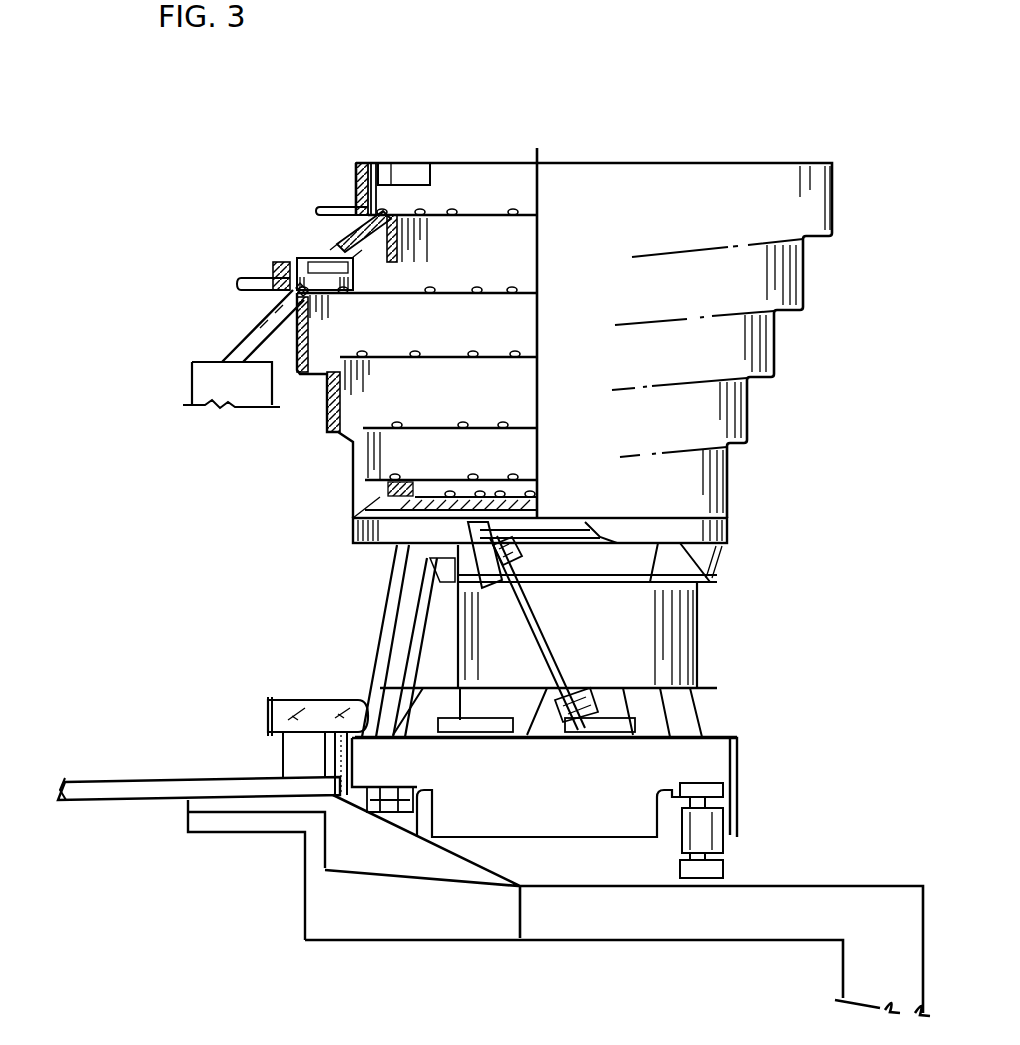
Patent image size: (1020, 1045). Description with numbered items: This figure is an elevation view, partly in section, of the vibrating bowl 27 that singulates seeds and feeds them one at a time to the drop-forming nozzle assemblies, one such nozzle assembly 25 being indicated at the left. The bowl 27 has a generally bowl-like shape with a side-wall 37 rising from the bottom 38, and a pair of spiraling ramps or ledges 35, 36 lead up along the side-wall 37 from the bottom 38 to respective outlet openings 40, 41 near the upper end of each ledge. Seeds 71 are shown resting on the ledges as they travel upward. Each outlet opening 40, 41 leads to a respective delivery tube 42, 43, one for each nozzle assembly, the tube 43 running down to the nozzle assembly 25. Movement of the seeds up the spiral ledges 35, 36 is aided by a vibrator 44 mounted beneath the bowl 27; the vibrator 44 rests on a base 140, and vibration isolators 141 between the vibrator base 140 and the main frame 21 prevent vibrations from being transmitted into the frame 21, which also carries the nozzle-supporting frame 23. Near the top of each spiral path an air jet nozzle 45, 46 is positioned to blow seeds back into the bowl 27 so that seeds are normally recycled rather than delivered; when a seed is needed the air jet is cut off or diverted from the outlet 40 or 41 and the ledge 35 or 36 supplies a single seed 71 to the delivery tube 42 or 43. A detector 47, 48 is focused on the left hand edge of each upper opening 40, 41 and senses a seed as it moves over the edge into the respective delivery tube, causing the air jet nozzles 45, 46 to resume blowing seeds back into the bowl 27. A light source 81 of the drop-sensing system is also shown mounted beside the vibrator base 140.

The main frame 21 is at (735, 925).
The nozzle-supporting frame 23 is at (255, 832).
The nozzle assembly 25 is at (250, 397).
The vibrating bowl 27 is at (622, 163).
The spiraling ledge 35 is at (474, 215).
The spiraling ledge 36 is at (383, 293).
The side-wall 37 is at (675, 285).
The bottom of the bowl 38 is at (403, 480).
The outlet opening 40 is at (399, 212).
The outlet opening 41 is at (313, 298).
The delivery tube 42 is at (344, 238).
The delivery tube 43 is at (243, 338).
The vibrator 44 is at (618, 660).
The air jet nozzle 45 is at (337, 207).
The air jet nozzle 46 is at (265, 278).
The detector 47 is at (402, 150).
The detector 48 is at (318, 257).
The seed 71 is at (504, 293).
The light source 81 is at (313, 700).
The vibrator base 140 is at (727, 772).
The vibration isolators 141 is at (712, 840).